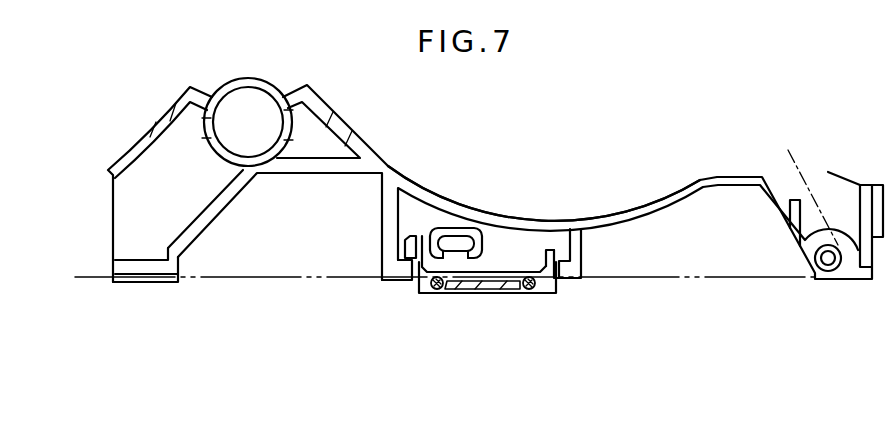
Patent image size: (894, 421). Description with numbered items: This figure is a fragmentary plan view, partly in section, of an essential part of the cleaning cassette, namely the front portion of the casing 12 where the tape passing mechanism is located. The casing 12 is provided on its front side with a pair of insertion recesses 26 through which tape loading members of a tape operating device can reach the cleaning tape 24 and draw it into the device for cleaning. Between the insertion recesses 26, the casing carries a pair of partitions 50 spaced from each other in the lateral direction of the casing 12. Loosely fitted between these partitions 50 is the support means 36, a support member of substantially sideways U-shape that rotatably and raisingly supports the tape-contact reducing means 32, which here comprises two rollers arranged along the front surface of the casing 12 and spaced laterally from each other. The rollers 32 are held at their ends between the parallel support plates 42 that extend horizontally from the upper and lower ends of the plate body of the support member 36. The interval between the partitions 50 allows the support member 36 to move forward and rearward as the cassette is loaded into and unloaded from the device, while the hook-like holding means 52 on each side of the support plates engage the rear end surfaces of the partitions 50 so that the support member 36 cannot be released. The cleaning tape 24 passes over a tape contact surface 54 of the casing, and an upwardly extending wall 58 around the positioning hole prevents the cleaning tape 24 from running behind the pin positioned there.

The casing 12 is at (660, 210).
The cleaning tape 24 is at (233, 278).
The insertion recesses 26 is at (282, 258).
The tape-contact reducing means 32 is at (437, 289).
The support means 36 is at (498, 289).
The support plates 42 is at (556, 292).
The partitions 50 is at (402, 279).
The holding means 52 is at (405, 238).
The tape contact surface 54 is at (148, 279).
The upwardly extending wall 58 is at (455, 228).